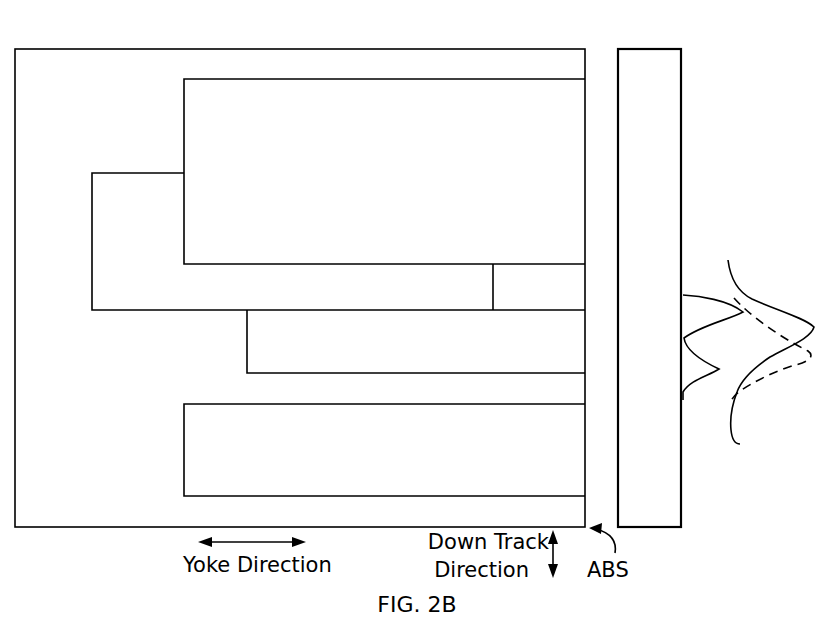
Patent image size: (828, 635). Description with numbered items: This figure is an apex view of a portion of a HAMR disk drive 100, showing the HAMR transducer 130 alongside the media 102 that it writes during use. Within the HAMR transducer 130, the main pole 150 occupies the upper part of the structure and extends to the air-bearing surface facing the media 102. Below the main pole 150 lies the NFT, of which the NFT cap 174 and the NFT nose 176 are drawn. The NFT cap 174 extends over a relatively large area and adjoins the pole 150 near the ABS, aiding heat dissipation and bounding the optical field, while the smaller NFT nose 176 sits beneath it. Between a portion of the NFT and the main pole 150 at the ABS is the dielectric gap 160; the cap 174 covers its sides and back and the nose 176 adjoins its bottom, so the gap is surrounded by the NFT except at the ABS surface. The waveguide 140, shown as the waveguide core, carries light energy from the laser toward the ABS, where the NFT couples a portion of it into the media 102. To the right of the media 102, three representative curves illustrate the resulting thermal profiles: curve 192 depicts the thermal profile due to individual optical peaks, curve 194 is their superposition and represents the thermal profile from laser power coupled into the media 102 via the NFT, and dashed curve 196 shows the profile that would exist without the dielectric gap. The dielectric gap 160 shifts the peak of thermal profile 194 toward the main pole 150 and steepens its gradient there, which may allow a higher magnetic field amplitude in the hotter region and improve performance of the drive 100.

The HAMR write apparatus 100 is at (396, 29).
The HAMR transducer 130 is at (320, 190).
The write pole 150 is at (384, 171).
The NFT cap 174 is at (293, 287).
The dielectric gap 160 is at (525, 287).
The NFT nose 176 is at (416, 341).
The waveguide 140 is at (384, 450).
The media 102 is at (649, 288).
The curve 192 is at (683, 295).
The curve 194 is at (752, 299).
The dashed curve 196 is at (771, 375).